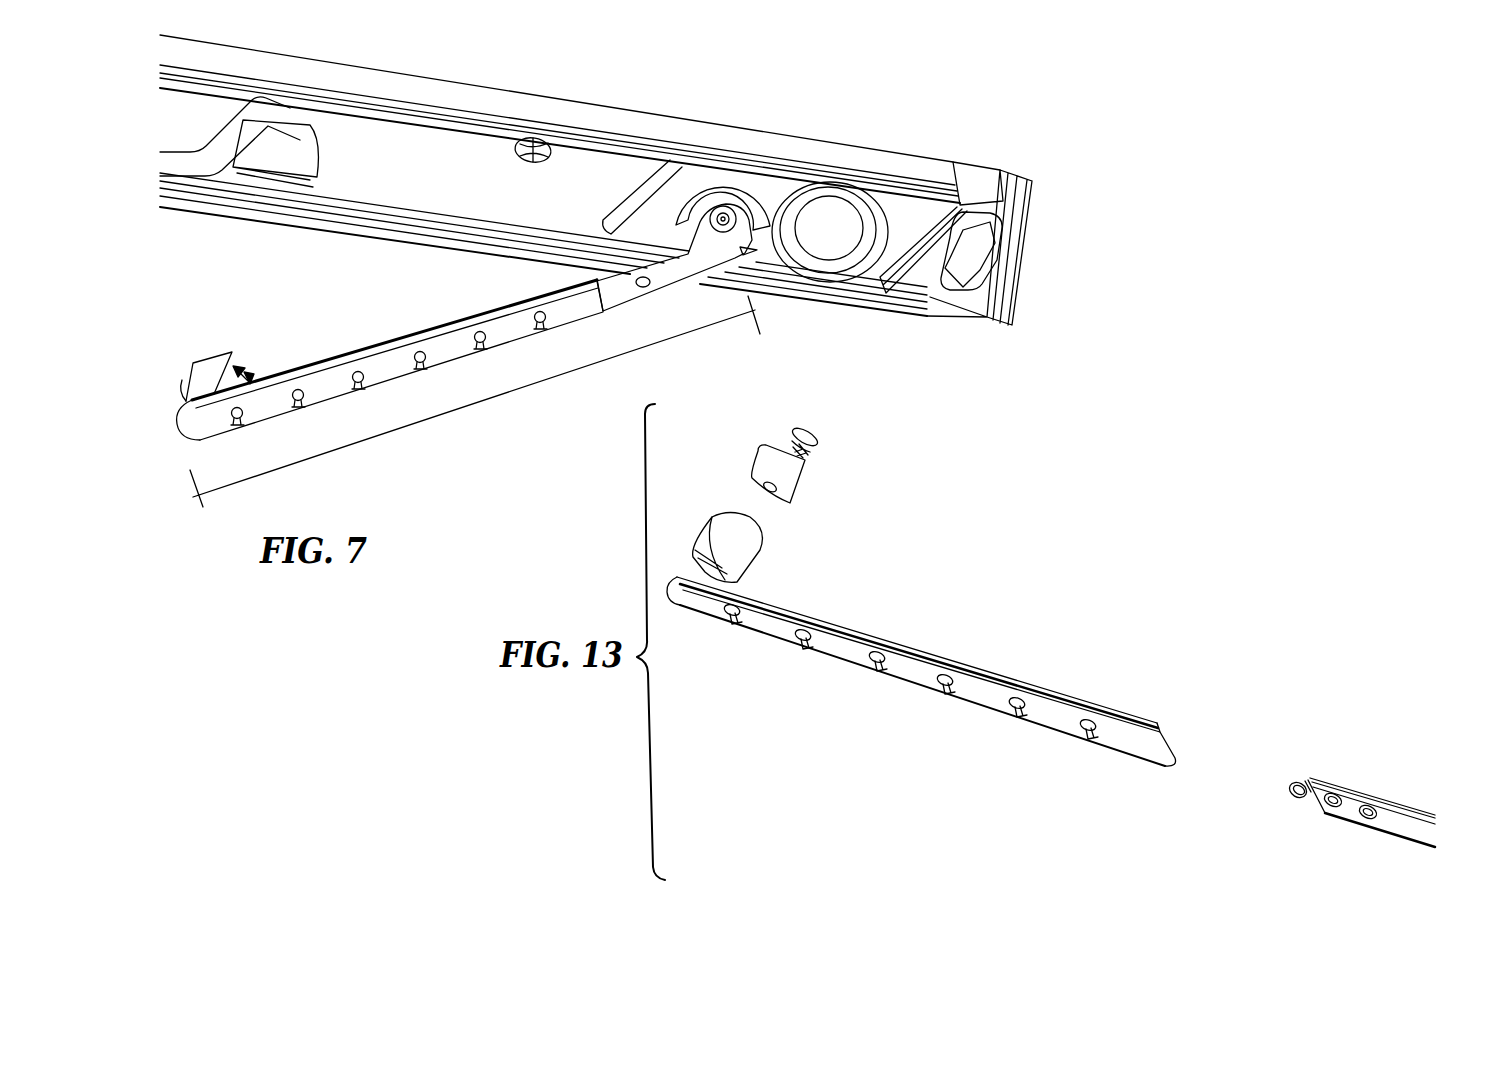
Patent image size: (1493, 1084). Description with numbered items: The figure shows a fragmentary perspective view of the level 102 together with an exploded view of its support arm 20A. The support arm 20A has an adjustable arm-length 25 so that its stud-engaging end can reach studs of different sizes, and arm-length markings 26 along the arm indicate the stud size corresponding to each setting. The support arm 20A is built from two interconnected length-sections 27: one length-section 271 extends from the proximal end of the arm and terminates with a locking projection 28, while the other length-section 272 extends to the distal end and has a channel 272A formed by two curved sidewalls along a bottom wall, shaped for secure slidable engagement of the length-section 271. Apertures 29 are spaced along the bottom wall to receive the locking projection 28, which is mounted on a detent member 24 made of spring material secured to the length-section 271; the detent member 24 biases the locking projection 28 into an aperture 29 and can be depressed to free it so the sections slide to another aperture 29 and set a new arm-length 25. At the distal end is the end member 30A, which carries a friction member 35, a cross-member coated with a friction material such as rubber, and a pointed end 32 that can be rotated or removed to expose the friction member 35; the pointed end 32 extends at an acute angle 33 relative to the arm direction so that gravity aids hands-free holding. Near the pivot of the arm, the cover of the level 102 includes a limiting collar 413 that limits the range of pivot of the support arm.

In FIG. 7, the level 102 is at (626, 97).
In FIG. 7, the limiting collar 413 is at (722, 195).
In FIG. 7, the length-sections 27 is at (512, 322).
In FIG. 7, the arm-length markings 26 is at (470, 348).
In FIG. 7, the support arm 20A is at (327, 383).
In FIG. 7, the end member 30A is at (205, 405).
In FIG. 7, the acute angle 33 is at (250, 383).
In FIG. 7, the arm-length 25 is at (500, 400).
In FIG. 13, the length-section 272 is at (987, 690).
In FIG. 13, the channel 272A is at (1163, 745).
In FIG. 13, the apertures 29 is at (940, 690).
In FIG. 13, the pointed end 32 is at (787, 477).
In FIG. 13, the friction member 35 is at (742, 543).
In FIG. 13, the locking projection 28 is at (1290, 787).
In FIG. 13, the length-section 271 is at (1388, 818).
In FIG. 13, the detent member 24 is at (1313, 796).